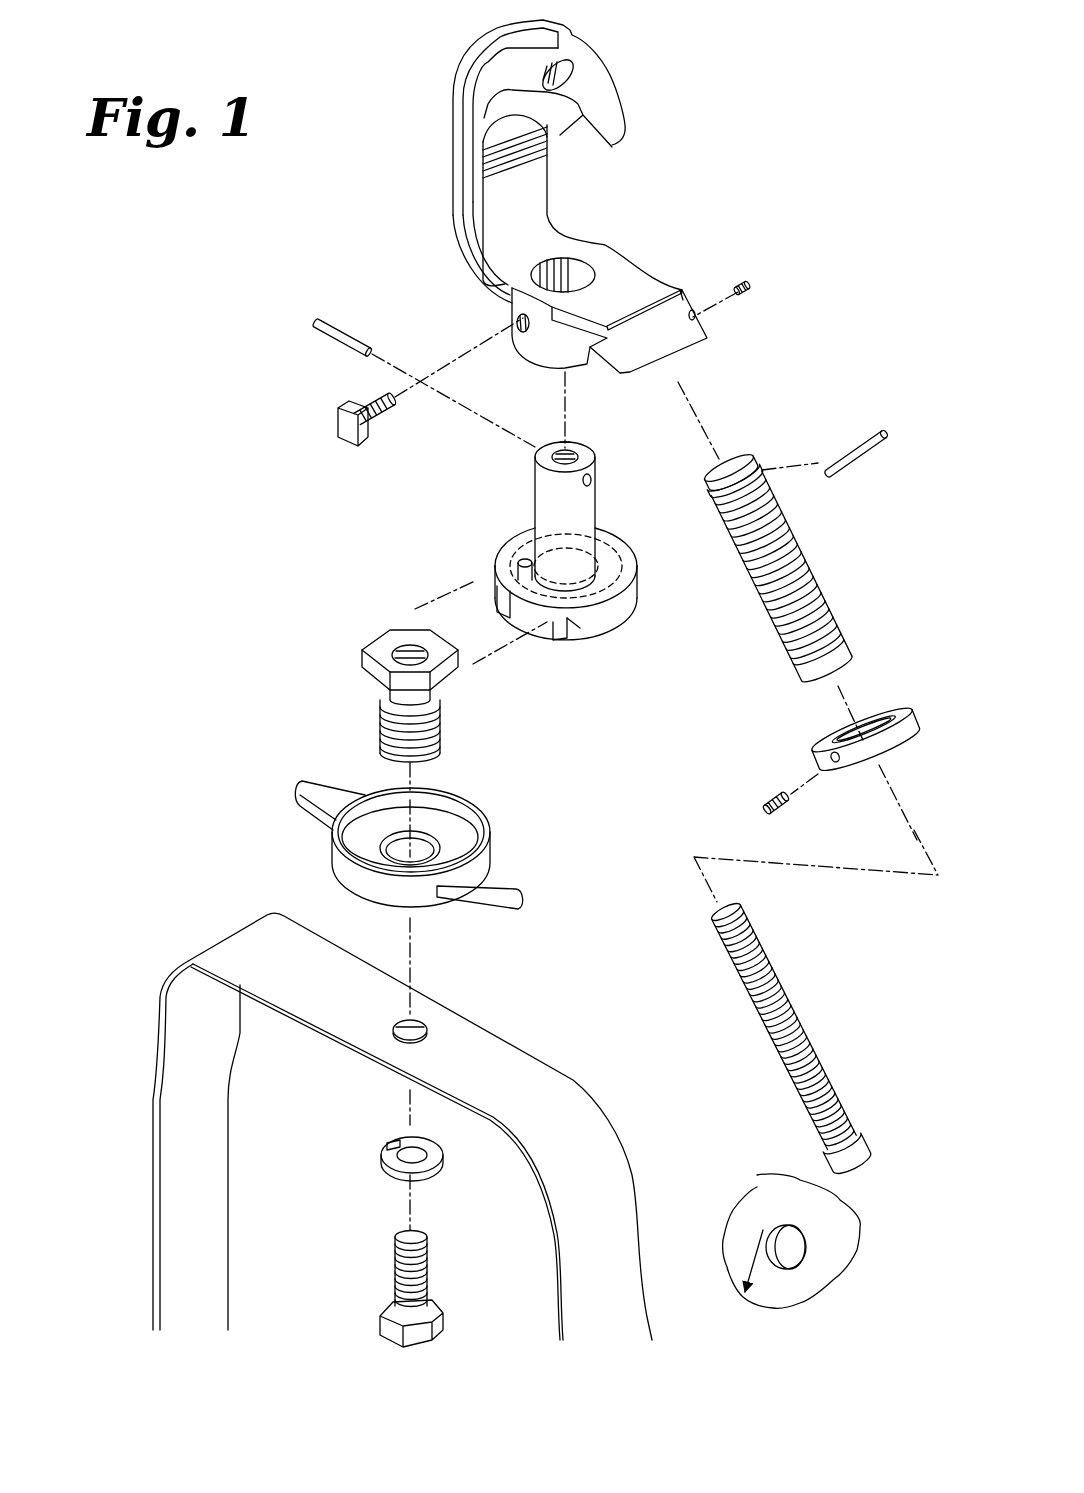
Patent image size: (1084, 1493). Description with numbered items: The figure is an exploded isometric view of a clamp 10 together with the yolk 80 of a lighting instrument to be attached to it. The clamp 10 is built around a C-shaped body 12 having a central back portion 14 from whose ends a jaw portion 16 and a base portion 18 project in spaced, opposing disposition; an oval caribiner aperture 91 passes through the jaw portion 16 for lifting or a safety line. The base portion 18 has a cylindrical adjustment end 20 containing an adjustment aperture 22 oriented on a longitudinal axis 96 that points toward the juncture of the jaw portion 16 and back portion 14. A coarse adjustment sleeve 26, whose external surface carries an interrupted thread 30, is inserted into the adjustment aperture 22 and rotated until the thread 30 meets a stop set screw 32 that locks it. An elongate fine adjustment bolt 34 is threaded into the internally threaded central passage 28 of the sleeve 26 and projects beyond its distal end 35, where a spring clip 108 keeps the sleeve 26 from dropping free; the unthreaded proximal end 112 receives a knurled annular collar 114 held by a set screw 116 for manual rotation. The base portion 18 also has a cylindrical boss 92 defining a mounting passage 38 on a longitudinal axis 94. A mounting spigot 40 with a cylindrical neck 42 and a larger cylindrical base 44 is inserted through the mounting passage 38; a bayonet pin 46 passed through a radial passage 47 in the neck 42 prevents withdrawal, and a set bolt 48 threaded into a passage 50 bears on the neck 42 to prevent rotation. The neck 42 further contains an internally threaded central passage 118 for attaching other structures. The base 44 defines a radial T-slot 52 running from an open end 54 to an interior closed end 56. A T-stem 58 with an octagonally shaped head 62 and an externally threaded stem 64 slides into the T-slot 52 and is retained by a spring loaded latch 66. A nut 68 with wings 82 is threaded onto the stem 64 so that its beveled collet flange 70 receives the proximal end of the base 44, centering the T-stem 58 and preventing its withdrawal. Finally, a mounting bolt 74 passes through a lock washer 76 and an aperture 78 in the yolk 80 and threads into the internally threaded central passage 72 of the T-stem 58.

The clamp 10 is at (798, 150).
The C-shaped body 12 is at (438, 126).
The back portion 14 is at (480, 200).
The jaw portion 16 is at (612, 100).
The base portion 18 is at (620, 287).
The adjustment end 20 is at (683, 289).
The adjustment aperture 22 is at (647, 307).
The coarse adjustment sleeve 26 is at (808, 557).
The internally threaded central passage 28 is at (735, 457).
The interrupted thread 30 is at (838, 612).
The stop set screw 32 is at (748, 293).
The fine adjustment bolt 34 is at (809, 1029).
The distal end 35 is at (750, 460).
The mounting passage 38 is at (572, 262).
The mounting spigot 40 is at (532, 500).
The cylindrical neck 42 is at (582, 510).
The cylindrical base 44 is at (628, 593).
The bayonet pin 46 is at (320, 340).
The radial passage 47 is at (591, 480).
The set bolt 48 is at (345, 444).
The passage 50 is at (516, 322).
The T-slot 52 is at (545, 640).
The open end 54 is at (570, 627).
The closed end 56 is at (640, 555).
The T-stem 58 is at (352, 672).
The octagonally shaped head 62 is at (378, 633).
The externally threaded stem 64 is at (442, 720).
The spring loaded latch 66 is at (513, 568).
The nut 68 is at (498, 831).
The collet flange 70 is at (440, 808).
The internally threaded central passage 72 is at (410, 645).
The mounting bolt 74 is at (430, 1267).
The lock washer 76 is at (442, 1165).
The aperture 78 is at (420, 1022).
The yolk 80 is at (570, 1108).
The wings 82 is at (332, 790).
The caribiner aperture 91 is at (566, 74).
The cylindrical boss 92 is at (537, 347).
The longitudinal axis 94 is at (562, 432).
The longitudinal axis 96 is at (700, 407).
The spring clip 108 is at (862, 448).
The proximal end 112 is at (838, 662).
The annular collar 114 is at (822, 745).
The set screw 116 is at (766, 800).
The internally threaded central passage 118 is at (567, 455).